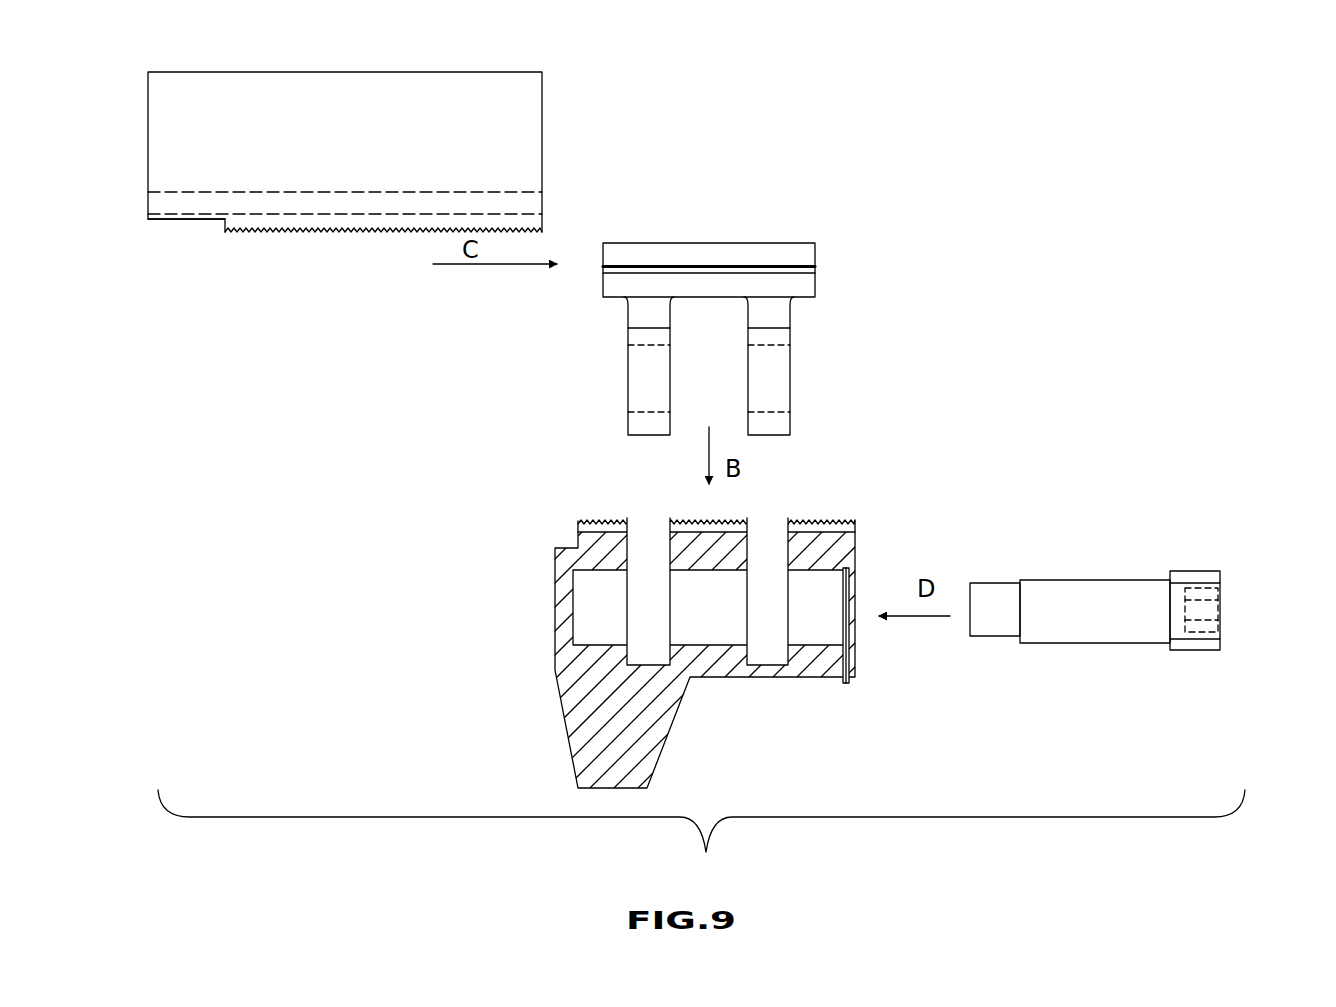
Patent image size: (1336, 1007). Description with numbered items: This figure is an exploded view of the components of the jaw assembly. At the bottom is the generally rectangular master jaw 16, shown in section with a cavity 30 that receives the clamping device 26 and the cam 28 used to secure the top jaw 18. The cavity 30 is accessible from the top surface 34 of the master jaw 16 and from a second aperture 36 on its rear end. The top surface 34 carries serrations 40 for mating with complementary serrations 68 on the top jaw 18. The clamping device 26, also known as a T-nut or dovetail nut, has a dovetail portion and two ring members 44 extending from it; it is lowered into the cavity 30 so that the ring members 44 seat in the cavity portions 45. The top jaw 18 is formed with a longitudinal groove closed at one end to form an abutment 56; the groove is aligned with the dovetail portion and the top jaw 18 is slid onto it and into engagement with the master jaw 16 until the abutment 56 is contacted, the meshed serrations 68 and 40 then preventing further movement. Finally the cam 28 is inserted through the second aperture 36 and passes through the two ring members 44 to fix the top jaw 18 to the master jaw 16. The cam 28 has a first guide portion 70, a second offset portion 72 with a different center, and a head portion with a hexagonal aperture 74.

The master jaw 16 is at (577, 728).
The top jaw 18 is at (513, 72).
The clamping device 26 is at (817, 260).
The cam 28 is at (1097, 580).
The cavity 30 is at (593, 592).
The top surface 34 is at (592, 531).
The second aperture 36 is at (857, 635).
The serrations 40 is at (823, 501).
The ring member 44 is at (647, 423).
The cavity portions 45 is at (650, 643).
The abutment 56 is at (170, 220).
The serrations 68 is at (325, 238).
The first guide portion 70 is at (993, 636).
The second offset portion 72 is at (1068, 643).
The hexagonal aperture 74 is at (1232, 615).